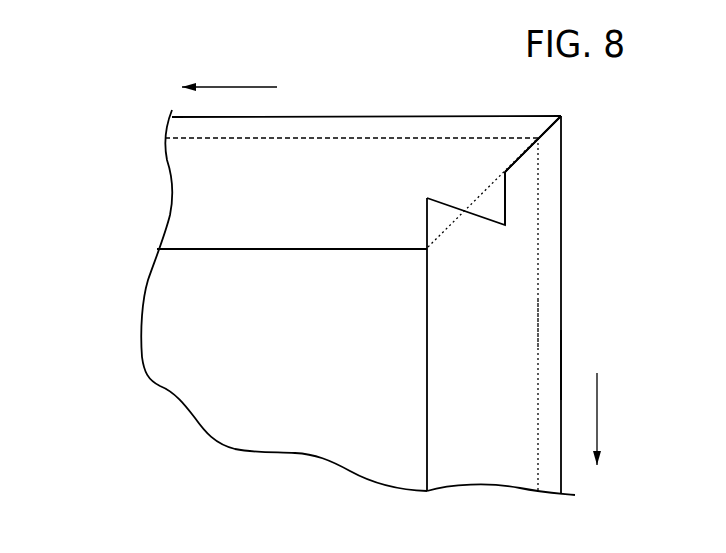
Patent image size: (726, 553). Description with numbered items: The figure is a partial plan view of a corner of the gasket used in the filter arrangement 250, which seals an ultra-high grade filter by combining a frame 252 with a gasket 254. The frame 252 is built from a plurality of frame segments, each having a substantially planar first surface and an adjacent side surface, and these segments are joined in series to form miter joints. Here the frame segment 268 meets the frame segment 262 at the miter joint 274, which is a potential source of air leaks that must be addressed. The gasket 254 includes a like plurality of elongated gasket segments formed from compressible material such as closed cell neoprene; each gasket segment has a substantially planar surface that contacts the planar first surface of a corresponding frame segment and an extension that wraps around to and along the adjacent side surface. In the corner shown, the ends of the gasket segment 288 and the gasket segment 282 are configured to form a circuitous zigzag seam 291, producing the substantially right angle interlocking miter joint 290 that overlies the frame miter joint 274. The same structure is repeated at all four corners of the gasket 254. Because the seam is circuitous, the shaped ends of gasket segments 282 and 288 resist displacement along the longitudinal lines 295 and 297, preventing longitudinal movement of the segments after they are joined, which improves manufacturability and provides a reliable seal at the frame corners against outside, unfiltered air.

The filter arrangement 250 is at (128, 180).
The frame 252 is at (548, 276).
The gasket 254 is at (572, 360).
The frame segment 262 is at (540, 324).
The frame segment 268 is at (286, 139).
The miter joint 274 is at (470, 200).
The gasket segment 282 is at (563, 197).
The gasket segment 288 is at (372, 117).
The interlocking miter joint 290 is at (520, 195).
The circuitous zigzag seam 291 is at (492, 212).
The longitudinal line 295 is at (597, 413).
The longitudinal line 297 is at (237, 85).